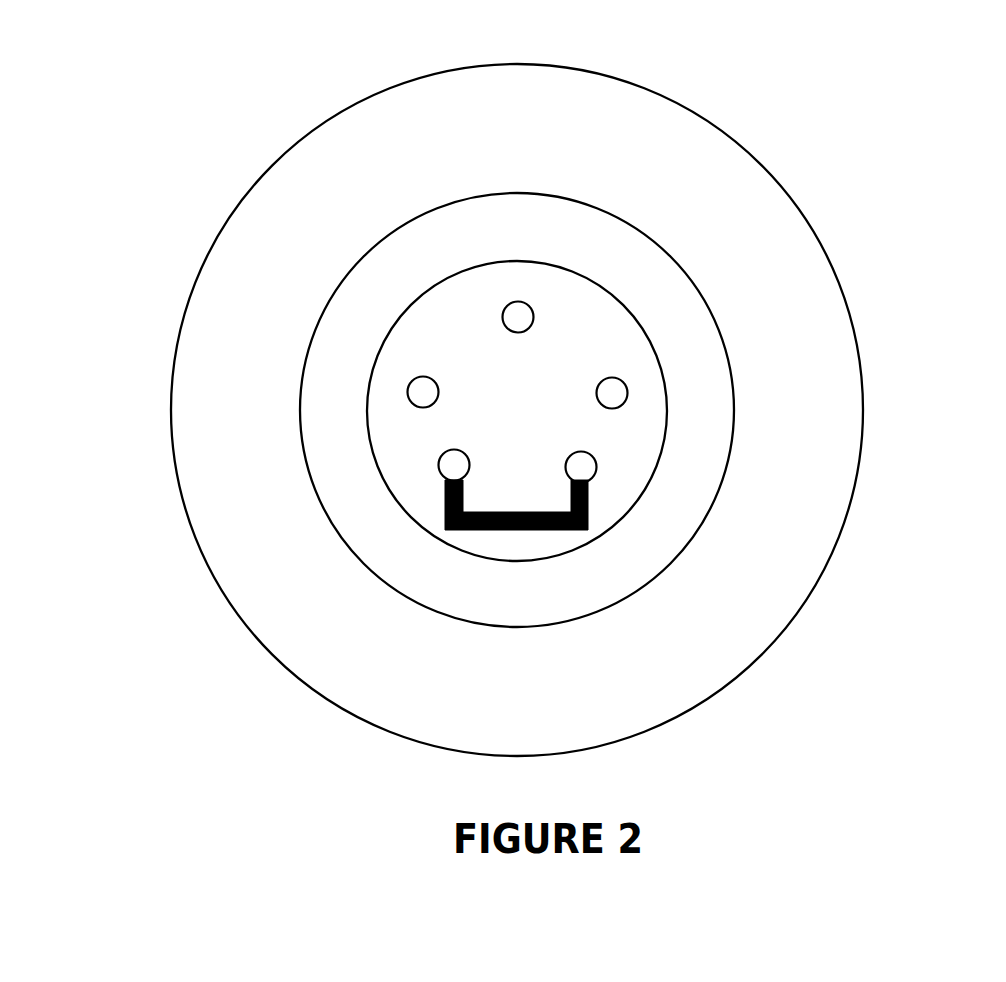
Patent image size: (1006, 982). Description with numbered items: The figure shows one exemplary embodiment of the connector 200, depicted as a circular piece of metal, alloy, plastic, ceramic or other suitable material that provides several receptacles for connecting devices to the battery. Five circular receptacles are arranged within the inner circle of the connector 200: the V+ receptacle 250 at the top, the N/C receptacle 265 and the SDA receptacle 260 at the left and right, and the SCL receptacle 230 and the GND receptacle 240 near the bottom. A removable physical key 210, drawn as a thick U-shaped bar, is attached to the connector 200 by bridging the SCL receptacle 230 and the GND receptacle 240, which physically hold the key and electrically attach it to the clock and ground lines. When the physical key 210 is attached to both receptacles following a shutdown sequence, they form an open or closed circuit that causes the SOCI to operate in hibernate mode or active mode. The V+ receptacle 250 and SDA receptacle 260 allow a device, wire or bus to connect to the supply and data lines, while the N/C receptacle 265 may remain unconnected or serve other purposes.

The connector 200 is at (140, 96).
The physical key 210 is at (518, 535).
The SCL receptacle 230 is at (599, 468).
The GND receptacle 240 is at (437, 466).
The V+ receptacle 250 is at (528, 305).
The SDA receptacle 260 is at (631, 393).
The N/C receptacle 265 is at (405, 392).